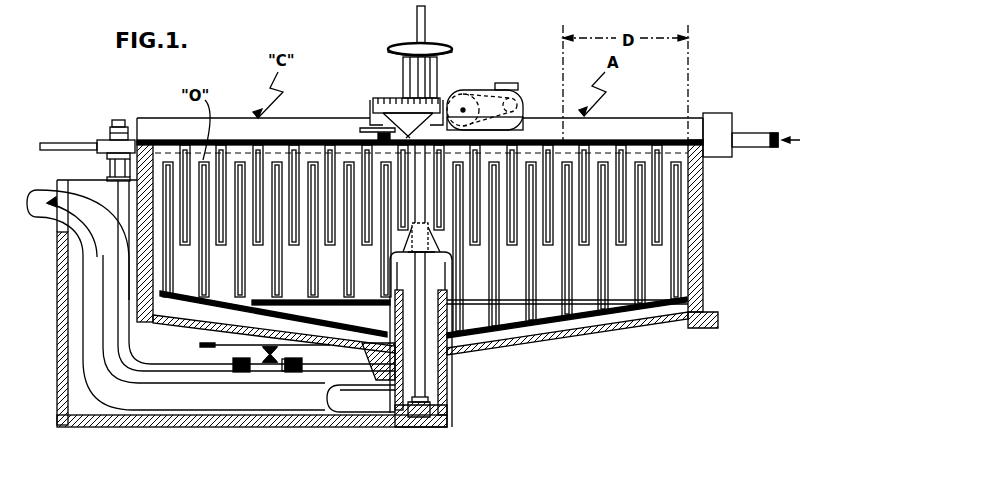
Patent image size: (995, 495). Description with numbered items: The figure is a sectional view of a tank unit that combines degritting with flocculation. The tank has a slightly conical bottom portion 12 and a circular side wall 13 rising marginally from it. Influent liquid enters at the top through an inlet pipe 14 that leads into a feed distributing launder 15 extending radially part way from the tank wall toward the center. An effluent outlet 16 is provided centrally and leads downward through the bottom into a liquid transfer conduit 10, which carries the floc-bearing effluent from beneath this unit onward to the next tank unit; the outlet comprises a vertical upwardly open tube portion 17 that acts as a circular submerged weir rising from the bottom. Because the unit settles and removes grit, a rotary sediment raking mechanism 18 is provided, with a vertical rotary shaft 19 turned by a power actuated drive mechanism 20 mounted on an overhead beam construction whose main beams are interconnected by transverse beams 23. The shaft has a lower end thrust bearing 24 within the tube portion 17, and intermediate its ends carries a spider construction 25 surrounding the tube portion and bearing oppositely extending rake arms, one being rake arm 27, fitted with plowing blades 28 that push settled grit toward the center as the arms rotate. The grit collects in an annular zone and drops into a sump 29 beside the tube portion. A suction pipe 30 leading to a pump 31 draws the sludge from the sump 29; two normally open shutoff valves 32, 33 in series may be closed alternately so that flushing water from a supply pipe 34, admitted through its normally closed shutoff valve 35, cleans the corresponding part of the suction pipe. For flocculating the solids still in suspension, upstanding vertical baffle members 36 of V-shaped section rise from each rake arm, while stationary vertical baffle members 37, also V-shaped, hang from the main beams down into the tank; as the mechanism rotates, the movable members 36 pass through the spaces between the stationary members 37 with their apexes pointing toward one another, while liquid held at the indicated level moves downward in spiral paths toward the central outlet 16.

The conduit 10 is at (100, 400).
The bottom portion 12 is at (588, 336).
The circular side wall 13 is at (703, 222).
The inlet pipe 14 is at (749, 133).
The feed distributing launder 15 is at (640, 117).
The effluent outlet 16 is at (436, 300).
The tube portion 17 is at (450, 306).
The rotary sediment raking mechanism 18 is at (330, 297).
The vertical rotary shaft 19 is at (420, 272).
The power actuated drive mechanism 20 is at (458, 88).
The transverse beams 23 is at (378, 135).
The lower end thrust bearing 24 is at (435, 428).
The spider construction 25 is at (403, 242).
The rake arm 27 is at (542, 317).
The plowing blades 28 is at (172, 312).
The sump 29 is at (380, 358).
The suction pipe 30 is at (205, 365).
The pump 31 is at (110, 133).
The shutoff valve 32 is at (244, 358).
The shutoff valve 33 is at (294, 372).
The supply pipe 34 is at (207, 342).
The shutoff valve 35 is at (270, 364).
The upstanding vertical baffle members 36 is at (498, 296).
The stationary vertical baffle members 37 is at (582, 247).